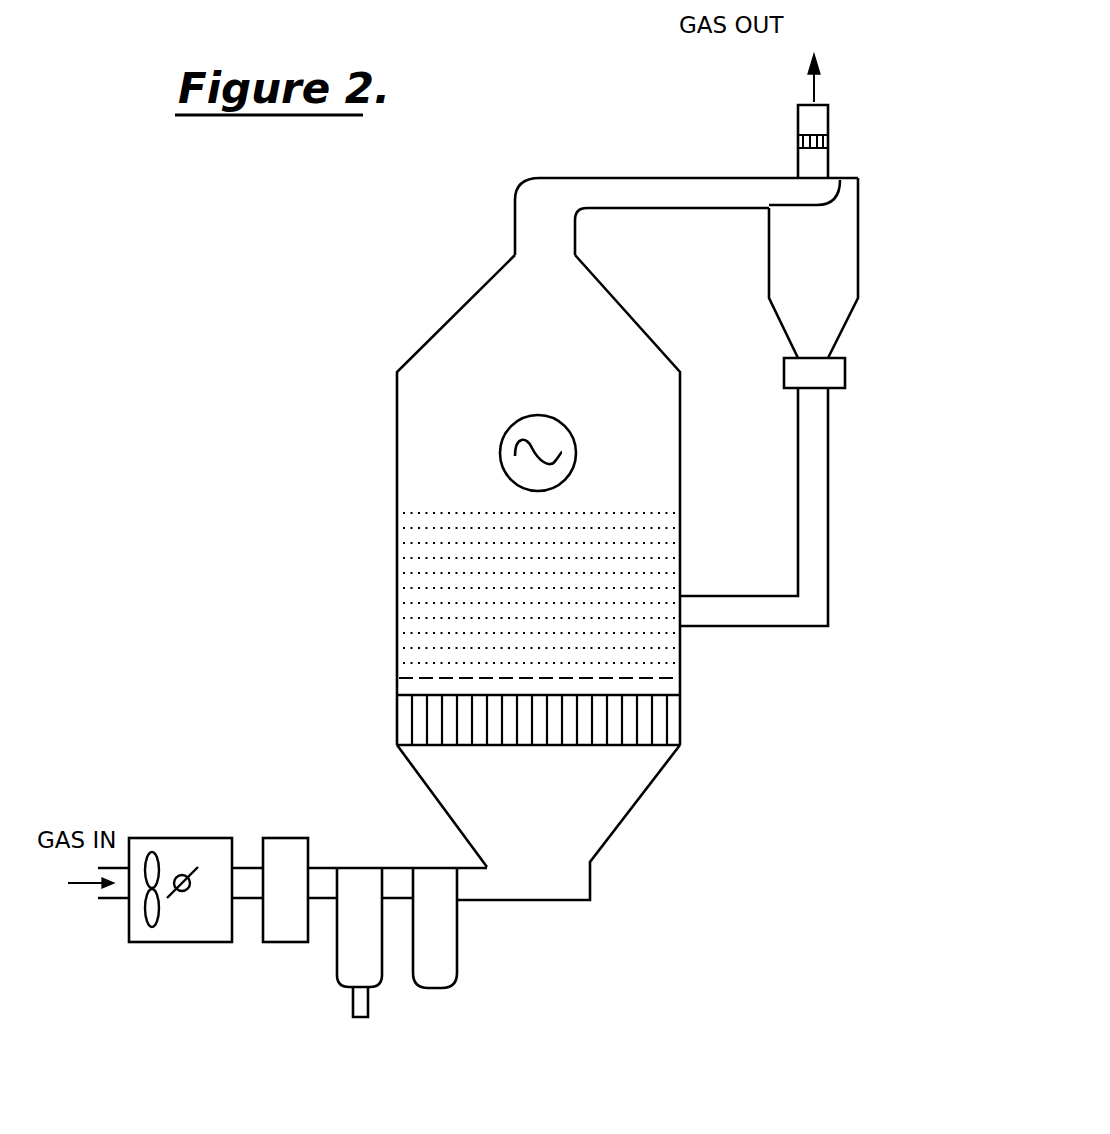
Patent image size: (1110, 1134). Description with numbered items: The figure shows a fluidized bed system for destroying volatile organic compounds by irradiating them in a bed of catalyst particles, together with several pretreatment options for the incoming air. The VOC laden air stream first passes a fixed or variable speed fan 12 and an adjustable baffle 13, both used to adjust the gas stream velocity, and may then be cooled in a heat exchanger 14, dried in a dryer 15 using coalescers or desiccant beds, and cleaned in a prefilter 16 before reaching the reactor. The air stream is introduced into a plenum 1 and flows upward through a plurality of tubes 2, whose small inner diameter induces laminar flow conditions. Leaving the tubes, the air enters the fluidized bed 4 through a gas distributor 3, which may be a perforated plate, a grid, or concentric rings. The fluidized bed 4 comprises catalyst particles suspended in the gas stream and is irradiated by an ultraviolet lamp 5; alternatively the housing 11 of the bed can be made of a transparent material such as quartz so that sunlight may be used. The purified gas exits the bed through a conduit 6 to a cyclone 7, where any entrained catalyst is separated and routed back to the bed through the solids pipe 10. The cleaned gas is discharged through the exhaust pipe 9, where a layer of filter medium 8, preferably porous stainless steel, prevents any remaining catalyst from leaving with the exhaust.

The plenum 1 is at (620, 797).
The tubes 2 is at (650, 723).
The gas distributor 3 is at (650, 678).
The fluidized bed 4 is at (650, 633).
The ultraviolet lamp 5 is at (590, 440).
The conduit 6 is at (633, 188).
The cyclone 7 is at (843, 277).
The layer of filter medium 8 is at (830, 138).
The exhaust pipe 9 is at (830, 110).
The solids pipe 10 is at (813, 603).
The housing 11 is at (397, 453).
The fan 12 is at (158, 928).
The adjustable baffle 13 is at (188, 898).
The heat exchanger 14 is at (277, 957).
The dryer 15 is at (382, 988).
The prefilter 16 is at (457, 988).